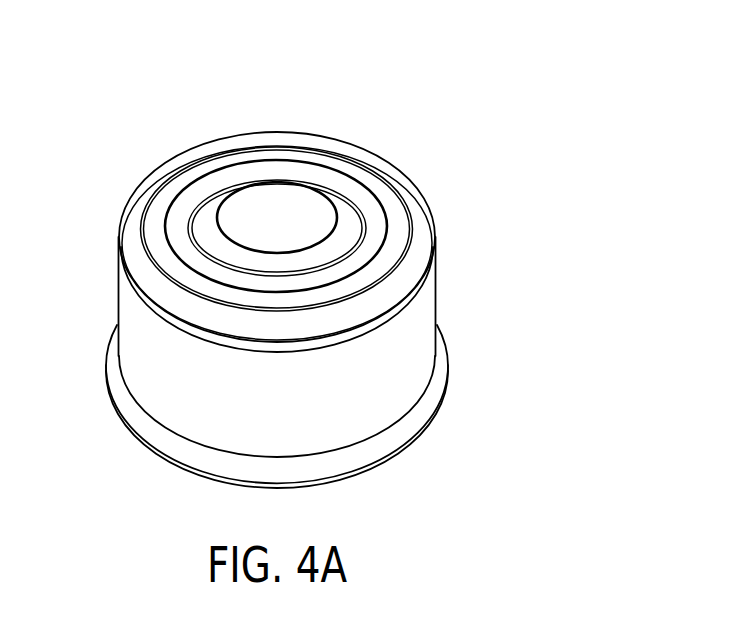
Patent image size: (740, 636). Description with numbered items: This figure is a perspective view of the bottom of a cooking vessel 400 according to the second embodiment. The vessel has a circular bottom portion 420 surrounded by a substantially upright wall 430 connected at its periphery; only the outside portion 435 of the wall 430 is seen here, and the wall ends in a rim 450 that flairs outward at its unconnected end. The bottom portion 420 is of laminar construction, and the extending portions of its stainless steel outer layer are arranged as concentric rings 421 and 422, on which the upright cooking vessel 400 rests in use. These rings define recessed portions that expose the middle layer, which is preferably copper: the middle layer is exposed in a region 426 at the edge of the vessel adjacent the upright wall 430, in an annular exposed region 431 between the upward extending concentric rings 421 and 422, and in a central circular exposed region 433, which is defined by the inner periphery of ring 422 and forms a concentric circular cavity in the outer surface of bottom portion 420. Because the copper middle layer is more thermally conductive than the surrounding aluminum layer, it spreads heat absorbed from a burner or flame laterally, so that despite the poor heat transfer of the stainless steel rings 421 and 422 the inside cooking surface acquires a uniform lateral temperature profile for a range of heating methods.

The cooking vessel 400 is at (141, 105).
The bottom portion 420 is at (267, 170).
The extending ring 421 is at (398, 205).
The extending ring 422 is at (340, 192).
The region 426 is at (155, 180).
The upright wall 430 is at (113, 318).
The annular exposed region 431 is at (241, 158).
The central circular exposed region 433 is at (275, 222).
The outside portion of wall 435 is at (437, 277).
The rim 450 is at (443, 378).